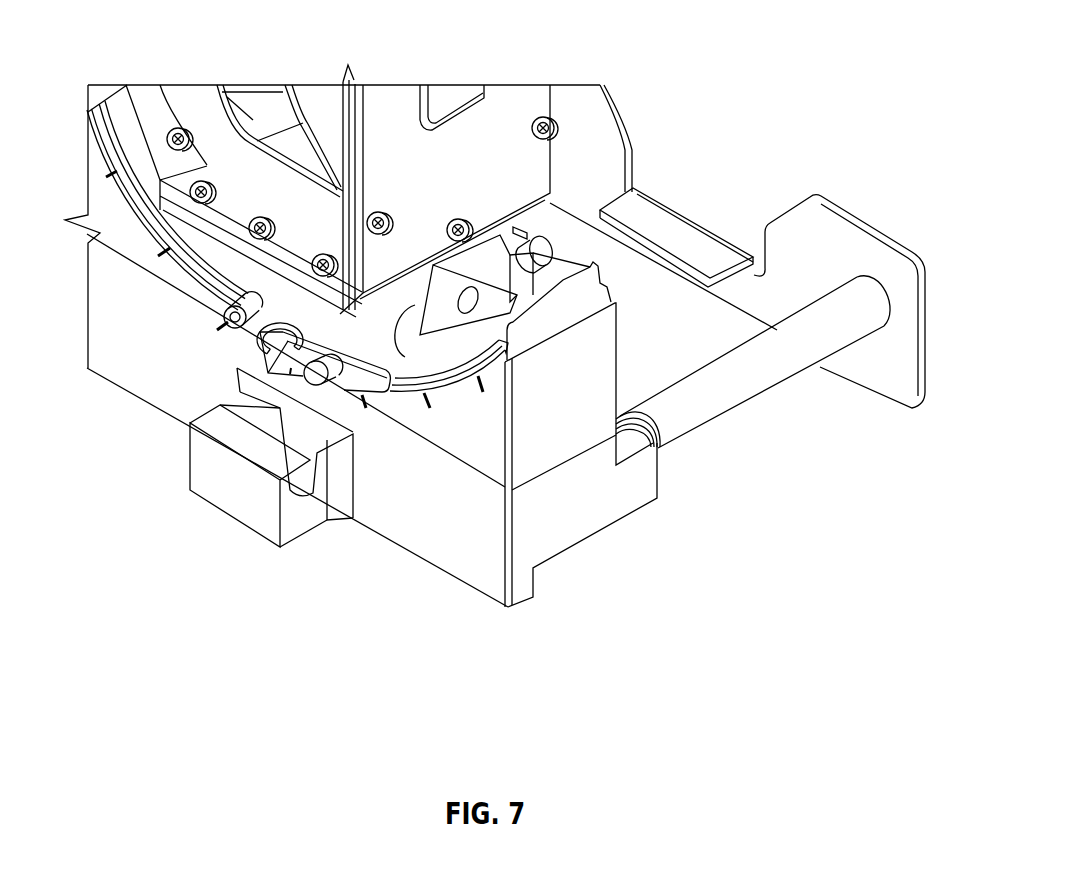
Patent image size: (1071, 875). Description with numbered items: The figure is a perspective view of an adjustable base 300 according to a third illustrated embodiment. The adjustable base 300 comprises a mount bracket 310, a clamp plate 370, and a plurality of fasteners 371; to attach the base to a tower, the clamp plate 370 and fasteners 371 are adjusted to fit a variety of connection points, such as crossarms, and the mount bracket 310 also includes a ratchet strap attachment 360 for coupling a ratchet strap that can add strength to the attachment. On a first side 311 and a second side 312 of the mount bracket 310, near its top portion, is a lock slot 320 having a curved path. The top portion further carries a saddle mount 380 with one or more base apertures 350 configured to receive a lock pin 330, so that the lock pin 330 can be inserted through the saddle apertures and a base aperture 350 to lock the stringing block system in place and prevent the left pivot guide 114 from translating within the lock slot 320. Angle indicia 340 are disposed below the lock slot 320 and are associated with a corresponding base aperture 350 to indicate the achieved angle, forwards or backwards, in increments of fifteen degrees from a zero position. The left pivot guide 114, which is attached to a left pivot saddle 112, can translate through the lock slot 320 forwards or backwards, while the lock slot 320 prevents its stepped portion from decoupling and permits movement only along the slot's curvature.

The adjustable base 300 is at (832, 54).
The left pivot saddle 112 is at (167, 210).
The left pivot guide 114 is at (247, 333).
The mount bracket 310 is at (403, 528).
The first side 311 is at (473, 567).
The second side 312 is at (617, 358).
The lock slot 320 is at (597, 290).
The lock pin 330 is at (377, 392).
The angle indicia 340 is at (195, 297).
The base aperture 350 is at (460, 292).
The ratchet strap attachment 360 is at (227, 513).
The clamp plate 370 is at (862, 237).
The fasteners 371 is at (762, 397).
The saddle mount 380 is at (532, 274).